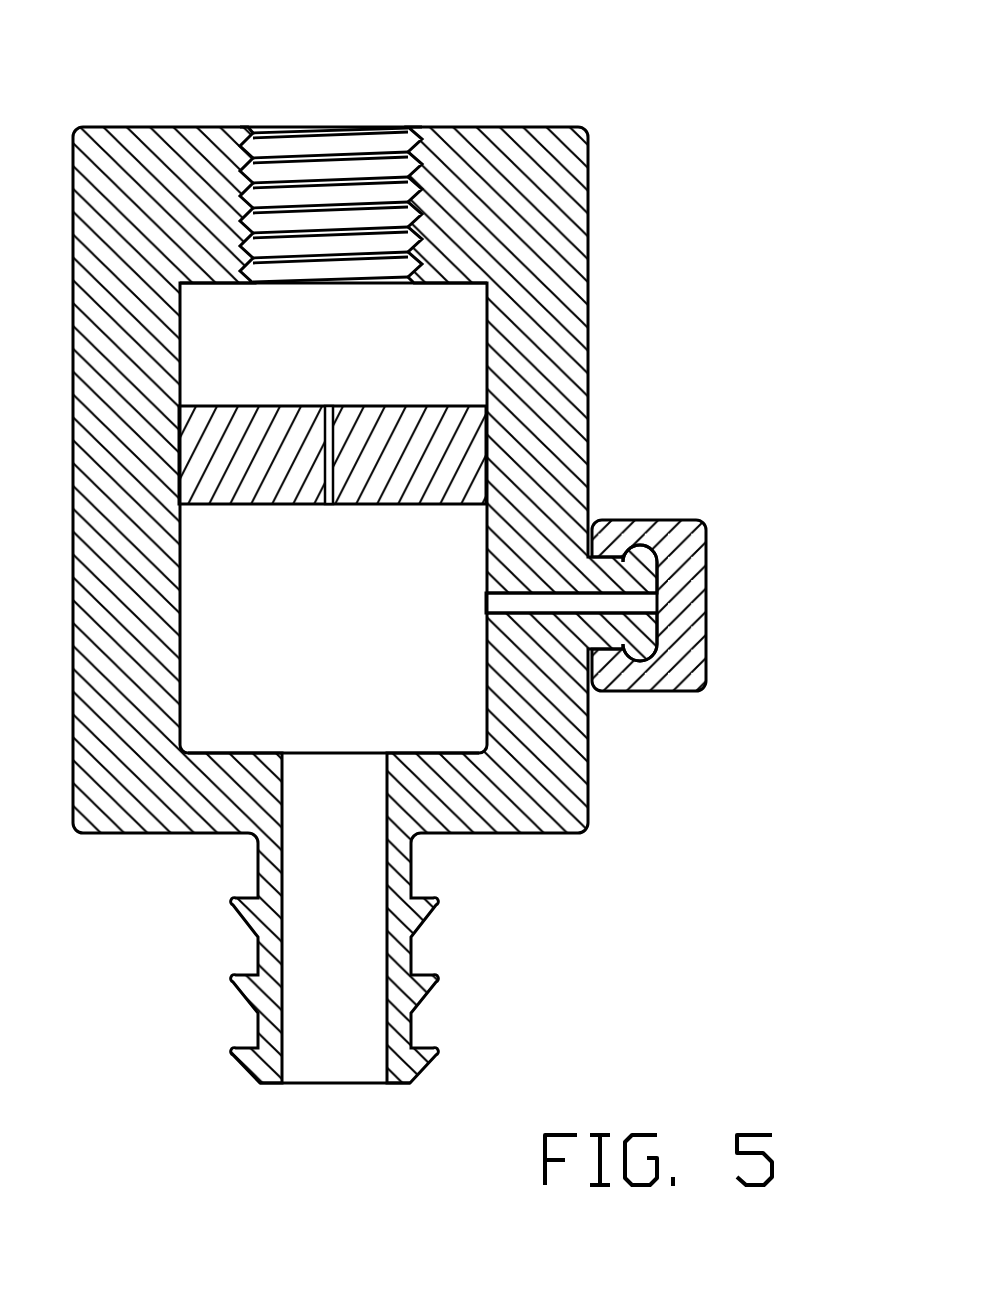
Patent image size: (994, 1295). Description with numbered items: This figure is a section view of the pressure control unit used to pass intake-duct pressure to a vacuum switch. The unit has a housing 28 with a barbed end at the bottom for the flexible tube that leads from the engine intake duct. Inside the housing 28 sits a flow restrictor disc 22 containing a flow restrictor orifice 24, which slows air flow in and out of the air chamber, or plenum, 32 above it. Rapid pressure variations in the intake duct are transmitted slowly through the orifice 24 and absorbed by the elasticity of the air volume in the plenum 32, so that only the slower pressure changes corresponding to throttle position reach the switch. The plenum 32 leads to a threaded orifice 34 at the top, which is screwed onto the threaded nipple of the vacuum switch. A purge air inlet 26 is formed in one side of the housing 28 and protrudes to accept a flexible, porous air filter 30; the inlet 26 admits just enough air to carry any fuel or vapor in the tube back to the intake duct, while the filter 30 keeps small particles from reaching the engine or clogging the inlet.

The flow restrictor disc 22 is at (465, 455).
The flow restrictor orifice 24 is at (335, 430).
The purge air inlet 26 is at (562, 615).
The housing 28 is at (588, 208).
The air filter 30 is at (706, 548).
The air chamber (plenum) 32 is at (445, 316).
The threaded orifice 34 is at (338, 140).